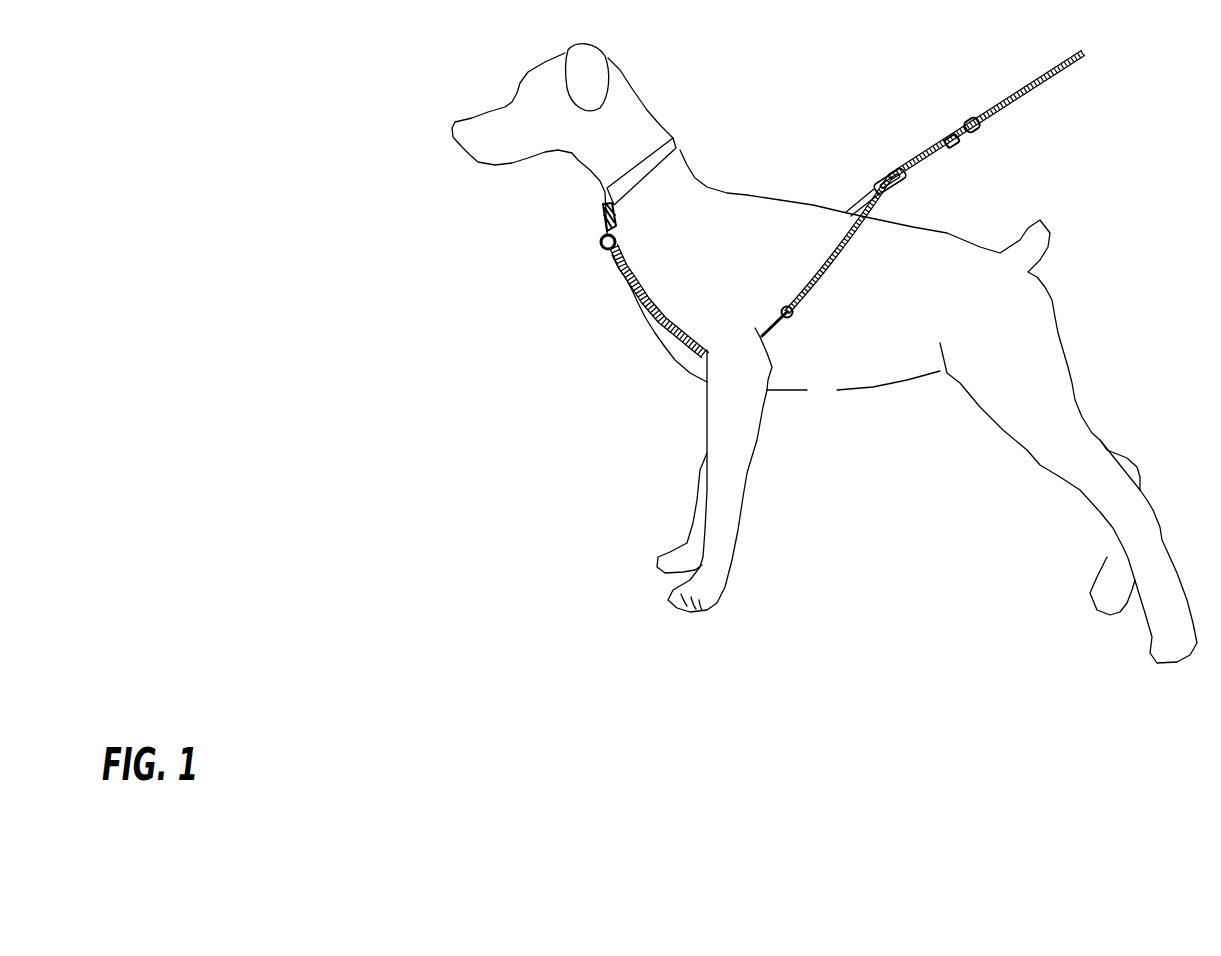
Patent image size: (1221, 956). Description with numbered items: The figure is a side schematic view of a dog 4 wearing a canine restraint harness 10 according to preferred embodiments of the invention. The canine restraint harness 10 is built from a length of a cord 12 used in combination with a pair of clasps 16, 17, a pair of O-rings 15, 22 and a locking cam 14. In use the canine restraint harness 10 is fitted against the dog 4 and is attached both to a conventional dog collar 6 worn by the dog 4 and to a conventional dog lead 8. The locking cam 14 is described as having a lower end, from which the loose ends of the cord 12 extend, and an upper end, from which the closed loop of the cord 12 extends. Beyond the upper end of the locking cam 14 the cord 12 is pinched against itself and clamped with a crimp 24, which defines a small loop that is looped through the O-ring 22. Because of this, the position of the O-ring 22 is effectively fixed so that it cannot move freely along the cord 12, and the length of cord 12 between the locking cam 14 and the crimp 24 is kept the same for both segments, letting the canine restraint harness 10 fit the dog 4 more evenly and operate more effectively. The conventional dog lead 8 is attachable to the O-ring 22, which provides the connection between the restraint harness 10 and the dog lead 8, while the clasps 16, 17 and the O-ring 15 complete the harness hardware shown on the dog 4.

The dog 4 is at (386, 51).
The dog collar 6 is at (678, 140).
The dog lead 8 is at (1043, 95).
The canine restraint harness 10 is at (849, 99).
The cord 12 is at (833, 262).
The locking cam 14 is at (882, 165).
The O-ring 15 is at (600, 246).
The clasp 16 is at (597, 219).
The clasp 17 is at (795, 318).
The O-ring 22 is at (970, 85).
The crimp 24 is at (957, 145).